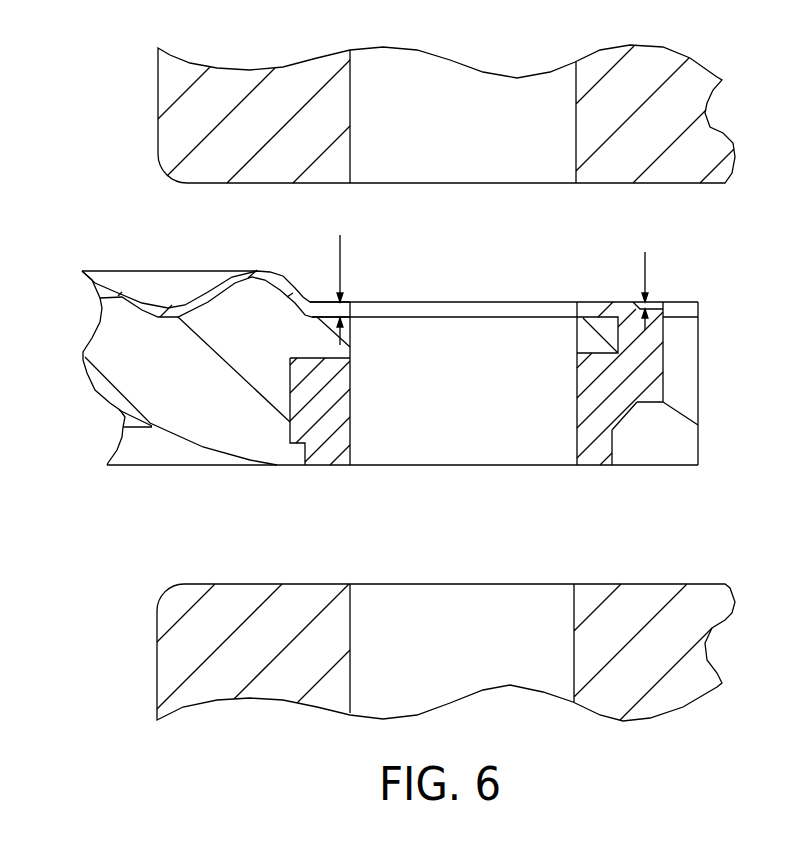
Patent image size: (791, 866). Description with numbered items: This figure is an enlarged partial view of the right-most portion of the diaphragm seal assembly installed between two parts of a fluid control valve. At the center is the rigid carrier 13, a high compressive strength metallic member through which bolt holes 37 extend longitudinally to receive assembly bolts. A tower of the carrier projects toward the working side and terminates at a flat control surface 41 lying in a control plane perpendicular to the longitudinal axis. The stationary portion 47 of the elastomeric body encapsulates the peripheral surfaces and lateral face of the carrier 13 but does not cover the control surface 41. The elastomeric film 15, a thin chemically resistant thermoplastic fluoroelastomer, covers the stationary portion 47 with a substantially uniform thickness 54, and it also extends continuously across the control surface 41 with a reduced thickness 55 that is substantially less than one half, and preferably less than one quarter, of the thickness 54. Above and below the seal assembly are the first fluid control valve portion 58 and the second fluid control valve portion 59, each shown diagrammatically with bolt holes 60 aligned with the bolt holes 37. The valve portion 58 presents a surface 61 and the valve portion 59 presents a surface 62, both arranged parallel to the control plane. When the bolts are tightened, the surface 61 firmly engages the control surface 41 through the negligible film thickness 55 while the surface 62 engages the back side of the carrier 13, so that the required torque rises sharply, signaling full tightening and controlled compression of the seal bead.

The rigid carrier 13 is at (337, 423).
The elastomeric film 15 is at (490, 303).
The bolt holes 37 is at (350, 342).
The control surface 41 is at (658, 302).
The stationary portion 47 is at (223, 420).
The thickness 54 is at (340, 253).
The reduced thickness 55 is at (645, 268).
The first fluid control valve portion 58 is at (290, 100).
The second fluid control valve portion 59 is at (295, 670).
The bolt holes 60 is at (350, 108).
The surface 61 is at (618, 184).
The surface 62 is at (638, 584).